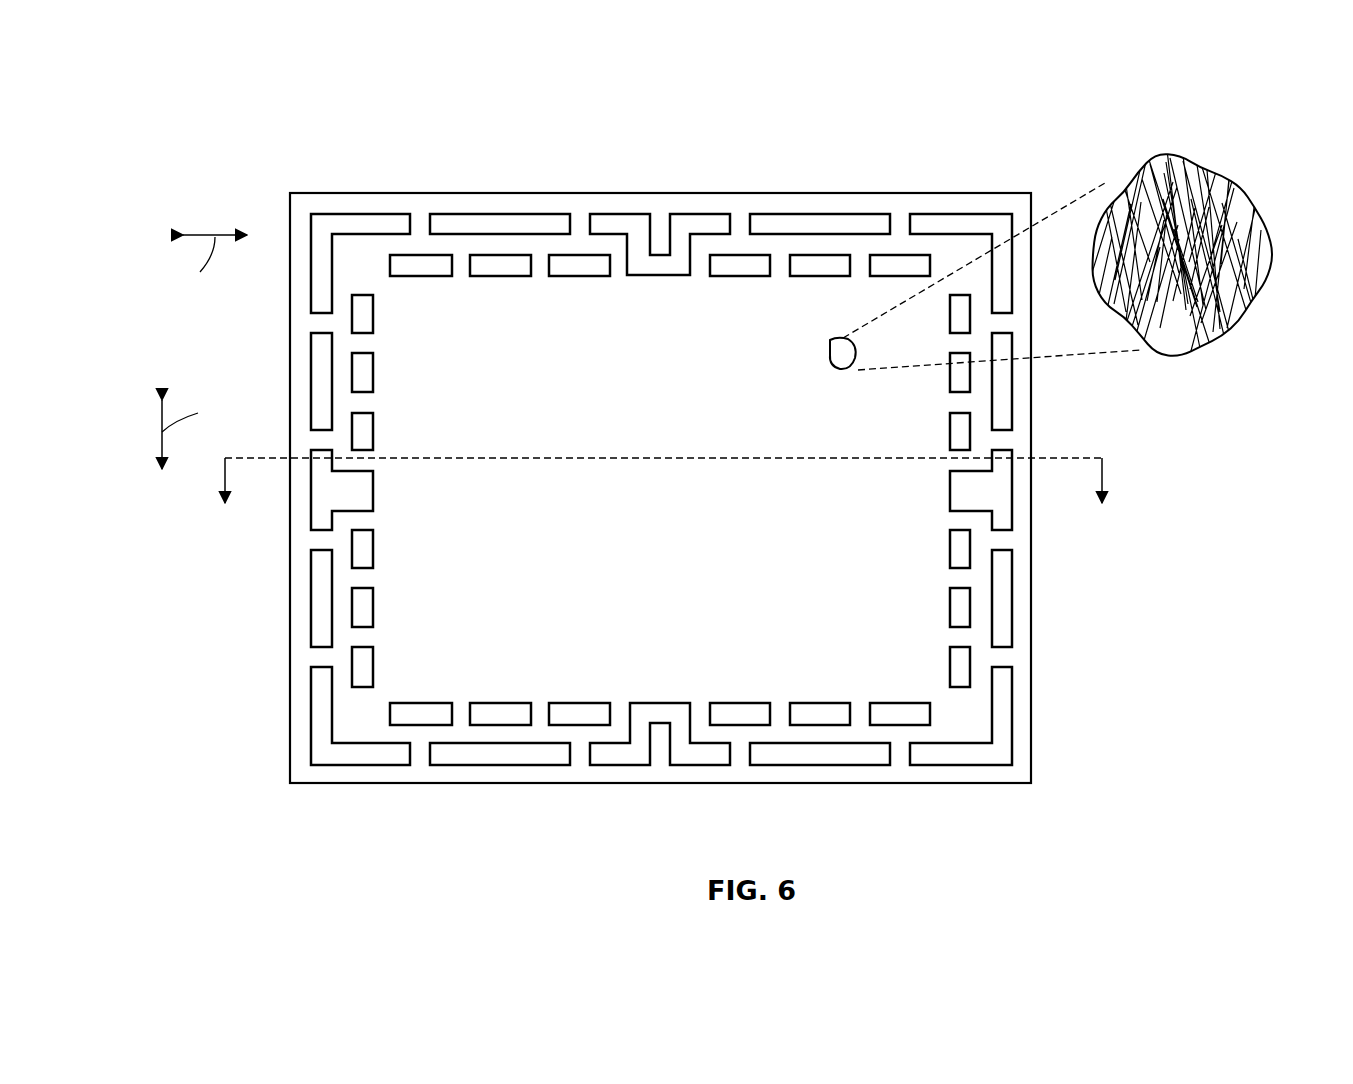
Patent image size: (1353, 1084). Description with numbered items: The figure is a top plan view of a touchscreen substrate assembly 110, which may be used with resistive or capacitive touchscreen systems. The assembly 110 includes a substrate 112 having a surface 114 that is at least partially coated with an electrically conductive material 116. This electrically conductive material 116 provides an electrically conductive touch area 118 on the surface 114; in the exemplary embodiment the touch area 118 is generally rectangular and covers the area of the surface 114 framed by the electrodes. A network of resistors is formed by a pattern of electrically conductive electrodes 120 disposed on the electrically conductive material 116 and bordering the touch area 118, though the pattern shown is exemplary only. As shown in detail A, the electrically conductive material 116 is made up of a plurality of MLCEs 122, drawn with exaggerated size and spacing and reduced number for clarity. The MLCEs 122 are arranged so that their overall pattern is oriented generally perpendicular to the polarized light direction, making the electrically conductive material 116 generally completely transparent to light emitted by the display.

The touchscreen substrate assembly 110 is at (240, 146).
The substrate 112 is at (968, 787).
The surface 114 is at (783, 682).
The electrically conductive material 116 is at (914, 598).
The electrically conductive touch area 118 is at (692, 310).
The electrically conductive electrodes 120 is at (376, 219).
The MLCEs 122 is at (1205, 220).